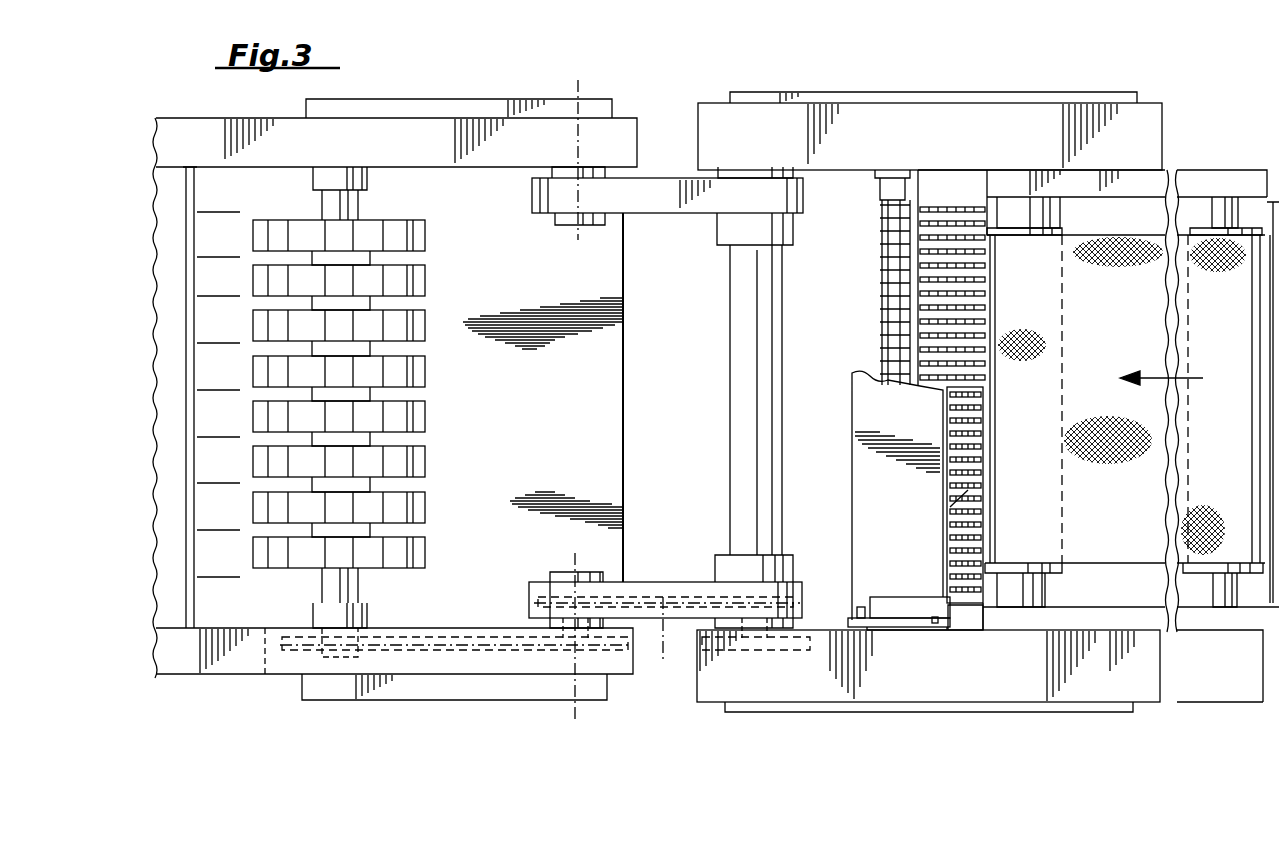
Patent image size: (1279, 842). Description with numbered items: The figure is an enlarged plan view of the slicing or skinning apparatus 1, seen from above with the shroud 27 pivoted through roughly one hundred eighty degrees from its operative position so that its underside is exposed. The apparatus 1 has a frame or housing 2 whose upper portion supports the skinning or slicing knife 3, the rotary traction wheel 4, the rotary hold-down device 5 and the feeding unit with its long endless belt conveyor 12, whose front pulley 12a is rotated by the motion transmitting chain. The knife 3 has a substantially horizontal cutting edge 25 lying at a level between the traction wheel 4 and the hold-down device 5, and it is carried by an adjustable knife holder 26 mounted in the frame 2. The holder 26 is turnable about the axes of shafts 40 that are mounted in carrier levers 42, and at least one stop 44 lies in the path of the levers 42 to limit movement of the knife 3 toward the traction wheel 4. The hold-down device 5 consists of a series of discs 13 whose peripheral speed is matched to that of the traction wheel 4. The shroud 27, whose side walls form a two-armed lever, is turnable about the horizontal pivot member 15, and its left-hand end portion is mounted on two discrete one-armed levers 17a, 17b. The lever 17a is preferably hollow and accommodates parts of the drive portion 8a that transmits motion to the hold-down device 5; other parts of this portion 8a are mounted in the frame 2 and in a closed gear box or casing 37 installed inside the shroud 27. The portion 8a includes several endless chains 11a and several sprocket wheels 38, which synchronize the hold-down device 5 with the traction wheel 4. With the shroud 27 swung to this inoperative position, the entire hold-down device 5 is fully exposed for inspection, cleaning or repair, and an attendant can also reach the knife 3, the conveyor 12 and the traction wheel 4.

The slicing or skinning apparatus 1 is at (1195, 149).
The frame or housing 2 is at (1147, 132).
The skinning or slicing tool (knife) 3 is at (947, 413).
The rotary advancing or traction element (traction wheel) 4 is at (953, 222).
The rotary biasing or hold-down device 5 is at (433, 417).
The portion of the drive means 8a is at (486, 650).
The endless chains 11a is at (468, 642).
The endless belt conveyor 12 is at (1118, 334).
The front pulley 12a is at (1055, 226).
The discs 13 is at (425, 272).
The horizontal pivot member 15 is at (583, 82).
The one-armed lever 17a is at (652, 588).
The one-armed lever 17b is at (665, 202).
The cutting edge 25 is at (951, 506).
The knife holder 26 is at (913, 521).
The hood or shroud 27 is at (458, 96).
The gear box or casing 37 is at (262, 660).
The sprocket wheels 38 is at (373, 645).
The shafts 40 is at (935, 623).
The levers (carriers) 42 is at (907, 627).
The stop 44 is at (855, 612).